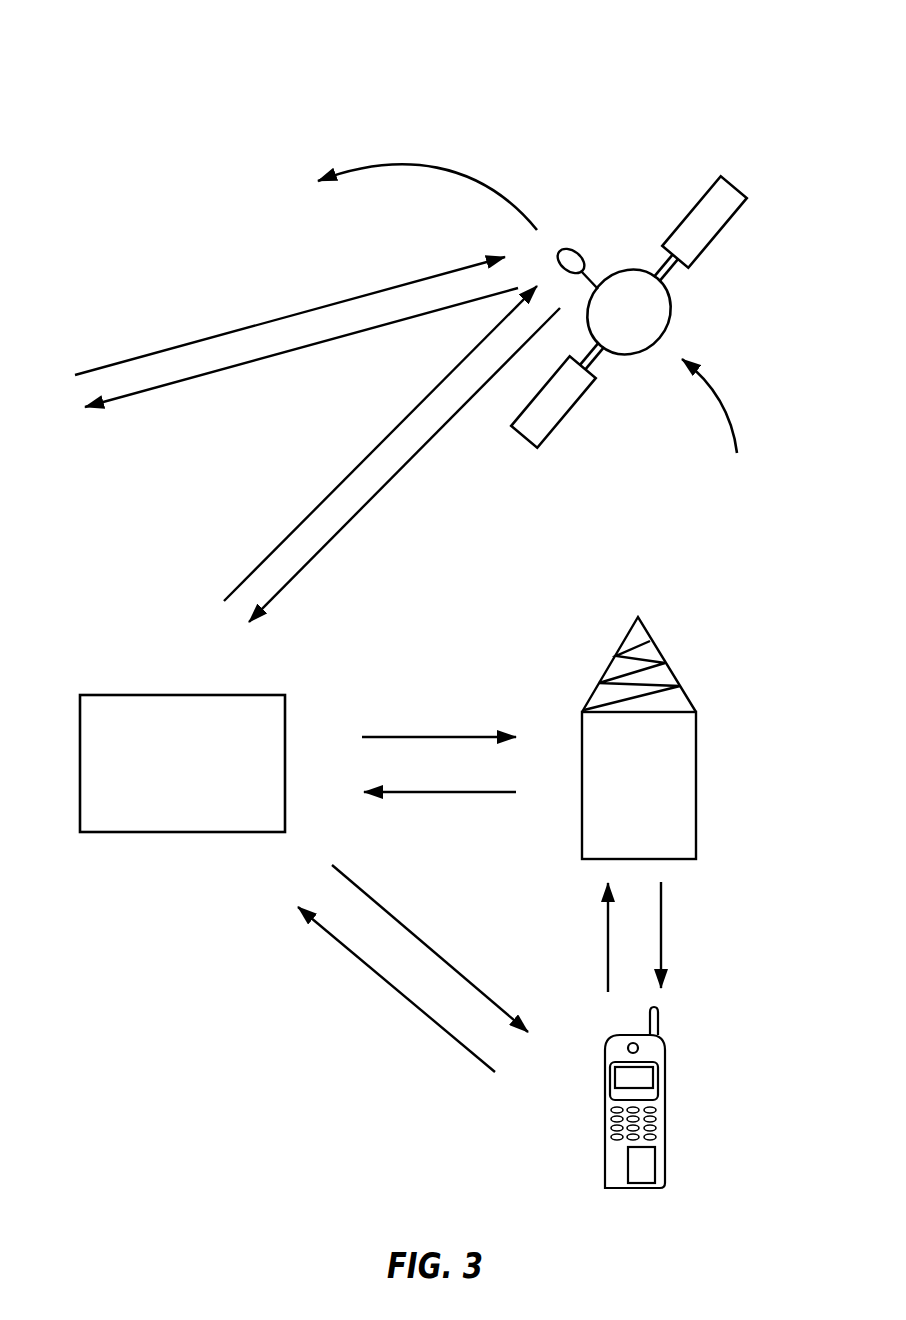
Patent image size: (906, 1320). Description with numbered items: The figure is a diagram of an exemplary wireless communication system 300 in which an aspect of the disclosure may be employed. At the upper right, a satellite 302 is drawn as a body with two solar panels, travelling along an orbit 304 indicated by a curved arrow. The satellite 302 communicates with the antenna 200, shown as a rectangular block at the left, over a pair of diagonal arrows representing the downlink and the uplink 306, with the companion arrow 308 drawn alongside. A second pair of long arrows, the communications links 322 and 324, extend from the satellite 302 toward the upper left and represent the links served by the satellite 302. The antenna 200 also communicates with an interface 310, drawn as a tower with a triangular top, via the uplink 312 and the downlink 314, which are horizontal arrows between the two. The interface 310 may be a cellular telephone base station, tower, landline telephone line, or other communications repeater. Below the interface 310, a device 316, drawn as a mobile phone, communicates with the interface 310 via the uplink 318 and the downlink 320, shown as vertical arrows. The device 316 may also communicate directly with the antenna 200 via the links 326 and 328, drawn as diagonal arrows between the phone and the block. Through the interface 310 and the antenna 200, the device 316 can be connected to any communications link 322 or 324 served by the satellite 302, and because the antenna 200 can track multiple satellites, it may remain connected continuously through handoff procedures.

The wireless communication system 300 is at (203, 60).
The satellite 302 is at (668, 300).
The orbit 304 is at (720, 419).
The uplink (forward link) 306 is at (368, 502).
The uplink signal from ground station to satellite 308 is at (352, 472).
The interface 310 is at (696, 744).
The uplink 312 is at (438, 736).
The downlink 314 is at (425, 793).
The device 316 is at (665, 1078).
The uplink 318 is at (608, 930).
The downlink 320 is at (661, 922).
The communications link 322 is at (269, 321).
The communications link 324 is at (269, 357).
The link 326 is at (375, 972).
The link 328 is at (400, 922).
The antenna 200 is at (152, 832).